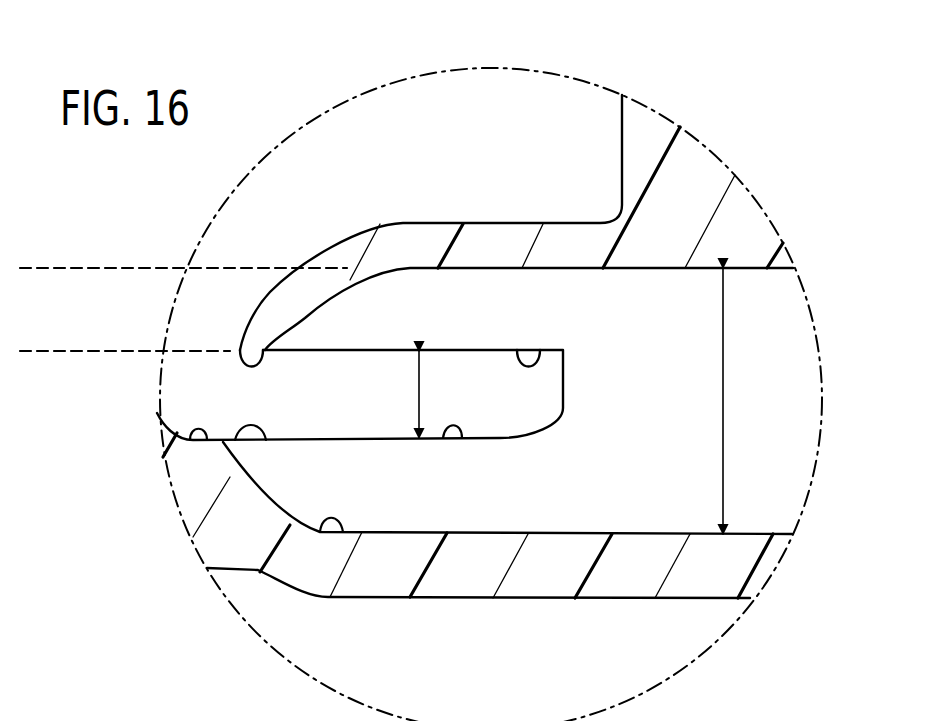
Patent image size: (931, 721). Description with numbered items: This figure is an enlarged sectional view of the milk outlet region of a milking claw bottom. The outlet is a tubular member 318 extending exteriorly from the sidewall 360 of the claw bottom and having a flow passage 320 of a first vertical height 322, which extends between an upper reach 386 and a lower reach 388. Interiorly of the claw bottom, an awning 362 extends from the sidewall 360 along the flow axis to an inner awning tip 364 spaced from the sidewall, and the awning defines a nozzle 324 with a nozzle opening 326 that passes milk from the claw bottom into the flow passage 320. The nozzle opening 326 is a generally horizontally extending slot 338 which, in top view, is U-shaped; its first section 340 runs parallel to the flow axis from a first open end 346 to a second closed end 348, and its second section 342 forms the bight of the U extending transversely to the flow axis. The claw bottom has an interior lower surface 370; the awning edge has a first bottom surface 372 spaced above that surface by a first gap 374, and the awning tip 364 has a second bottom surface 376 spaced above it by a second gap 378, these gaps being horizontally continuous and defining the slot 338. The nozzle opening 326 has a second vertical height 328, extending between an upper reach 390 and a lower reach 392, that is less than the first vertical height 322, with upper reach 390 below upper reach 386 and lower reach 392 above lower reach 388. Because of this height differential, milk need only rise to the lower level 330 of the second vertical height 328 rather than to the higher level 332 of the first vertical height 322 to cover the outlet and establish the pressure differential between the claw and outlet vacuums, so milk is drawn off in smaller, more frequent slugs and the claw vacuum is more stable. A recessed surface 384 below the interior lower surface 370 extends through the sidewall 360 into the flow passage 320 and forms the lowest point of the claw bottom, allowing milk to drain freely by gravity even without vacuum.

The tubular member 318 is at (722, 585).
The flow passage 320 is at (798, 438).
The first vertical height 322 is at (725, 372).
The nozzle 324 is at (215, 320).
The nozzle opening 326 is at (206, 402).
The second vertical height 328 is at (425, 395).
The level of second vertical height 330 is at (71, 352).
The level of first vertical height 332 is at (76, 267).
The slot 338 is at (540, 387).
The first section 340 is at (461, 438).
The second section 342 is at (266, 440).
The first open end 346 is at (223, 365).
The second closed end 348 is at (563, 395).
The sidewall 360 is at (700, 170).
The awning 362 is at (424, 223).
The inner awning tip 364 is at (237, 350).
The interior lower surface 370 is at (207, 440).
The first bottom surface 372 is at (517, 350).
The first gap 374 is at (452, 370).
The second bottom surface 376 is at (267, 350).
The second gap 378 is at (257, 403).
The recessed surface 384 is at (343, 530).
The upper reach of first vertical height 386 is at (723, 266).
The lower reach of first vertical height 388 is at (722, 534).
The upper reach of second vertical height 390 is at (417, 350).
The lower reach of second vertical height 392 is at (417, 440).